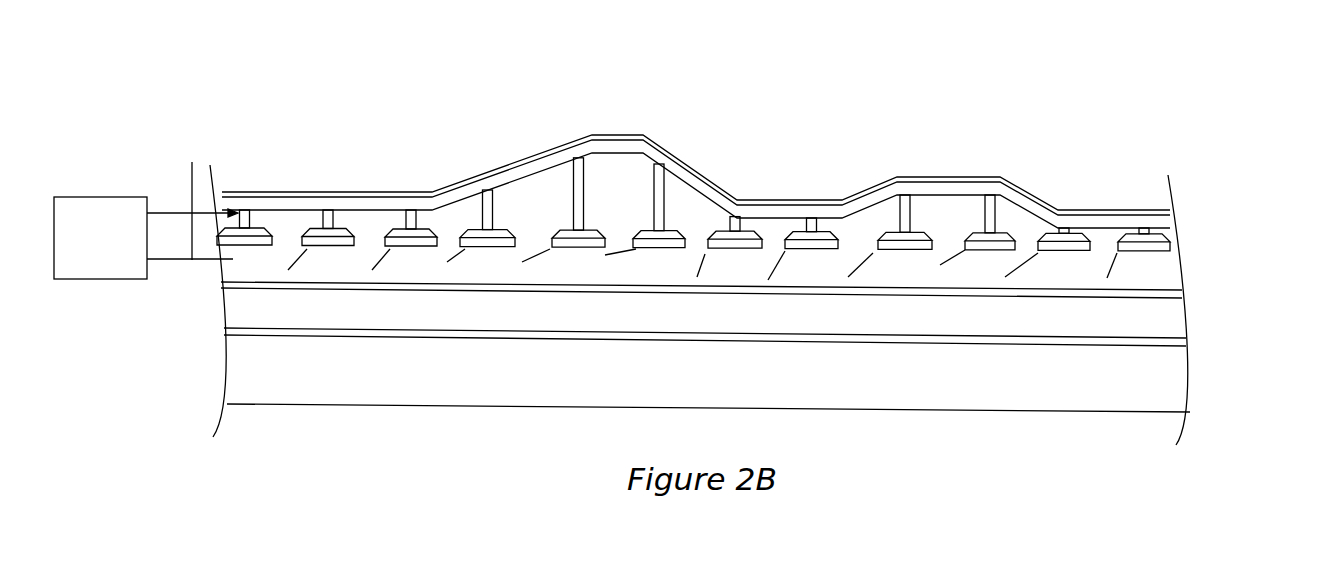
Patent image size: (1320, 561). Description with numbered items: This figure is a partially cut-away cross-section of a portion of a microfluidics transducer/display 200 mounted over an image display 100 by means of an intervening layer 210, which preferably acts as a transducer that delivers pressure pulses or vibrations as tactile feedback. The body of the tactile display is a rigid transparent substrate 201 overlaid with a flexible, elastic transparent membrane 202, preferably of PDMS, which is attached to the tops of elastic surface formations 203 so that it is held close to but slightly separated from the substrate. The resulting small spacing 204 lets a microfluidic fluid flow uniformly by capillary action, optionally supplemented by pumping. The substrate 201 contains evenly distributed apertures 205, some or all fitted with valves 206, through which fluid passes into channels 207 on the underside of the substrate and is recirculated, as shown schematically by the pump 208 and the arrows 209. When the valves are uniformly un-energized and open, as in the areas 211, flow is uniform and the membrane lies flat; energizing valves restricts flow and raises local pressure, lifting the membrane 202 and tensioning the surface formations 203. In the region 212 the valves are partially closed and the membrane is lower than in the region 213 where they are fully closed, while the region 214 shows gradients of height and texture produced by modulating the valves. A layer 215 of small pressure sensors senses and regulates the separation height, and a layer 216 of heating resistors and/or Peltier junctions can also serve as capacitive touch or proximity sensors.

The image display 100 is at (1168, 392).
The microfluidics transducer/display 200 is at (1228, 160).
The substrate 201 is at (1198, 252).
The membrane 202 is at (1160, 222).
The surface formations 203 is at (584, 191).
The spacing 204 is at (318, 227).
The apertures 205 is at (960, 243).
The valves 206 is at (865, 253).
The channels 207 is at (248, 267).
The pump 208 is at (98, 196).
The arrows 209 is at (168, 213).
The intervening layer 210 is at (1178, 347).
The areas 211 is at (263, 110).
The region 212 is at (887, 89).
The region 213 is at (582, 49).
The region 214 is at (555, 42).
The layer 215 is at (245, 290).
The layer 216 is at (436, 196).